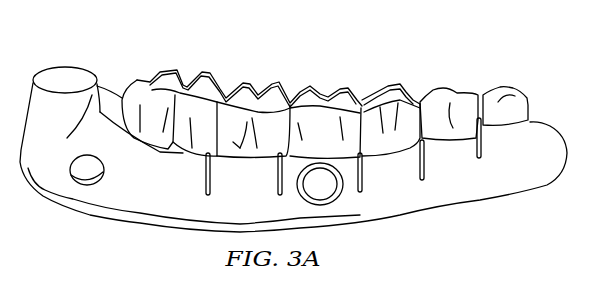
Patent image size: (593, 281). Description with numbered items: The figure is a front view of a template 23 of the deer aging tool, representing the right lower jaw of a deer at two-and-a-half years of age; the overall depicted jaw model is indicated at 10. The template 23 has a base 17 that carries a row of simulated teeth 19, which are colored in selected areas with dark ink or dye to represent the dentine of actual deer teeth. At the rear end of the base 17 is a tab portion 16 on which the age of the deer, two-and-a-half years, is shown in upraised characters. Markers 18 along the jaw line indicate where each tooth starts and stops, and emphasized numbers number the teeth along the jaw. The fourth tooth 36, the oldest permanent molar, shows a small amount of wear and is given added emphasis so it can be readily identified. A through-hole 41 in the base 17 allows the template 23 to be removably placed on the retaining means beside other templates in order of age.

The dental model 10 is at (293, 142).
The tab portion 16 is at (33, 80).
The base 17 is at (293, 168).
The markers 18 is at (427, 172).
The simulated teeth 19 is at (145, 85).
The template 23 is at (482, 67).
The fourth tooth 36 is at (336, 141).
The through-hole 41 is at (72, 172).